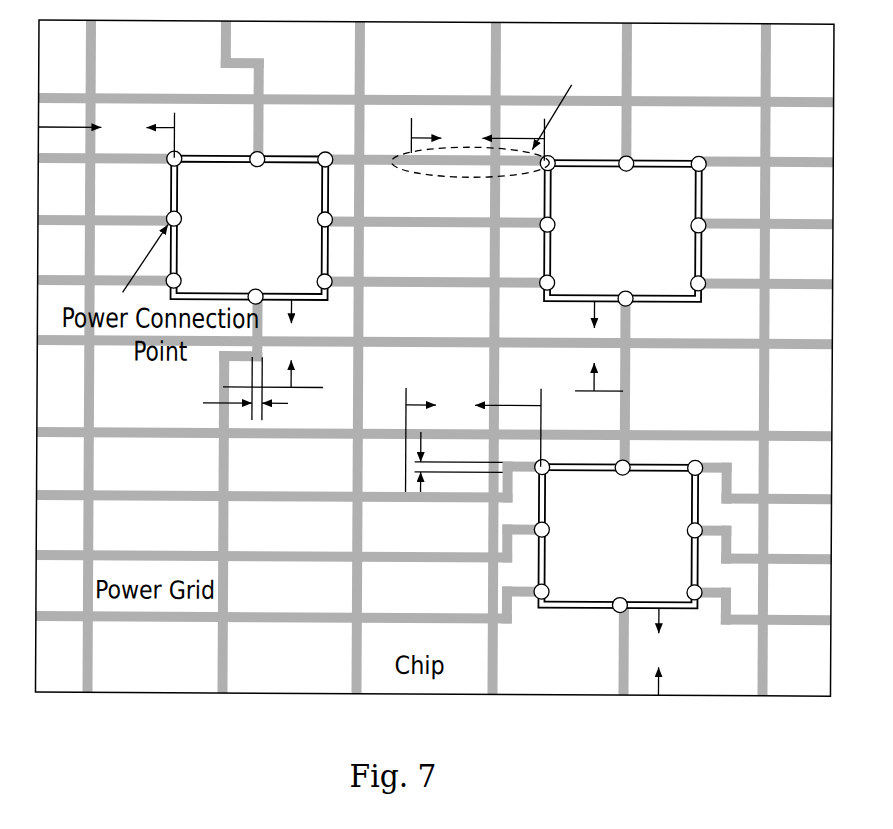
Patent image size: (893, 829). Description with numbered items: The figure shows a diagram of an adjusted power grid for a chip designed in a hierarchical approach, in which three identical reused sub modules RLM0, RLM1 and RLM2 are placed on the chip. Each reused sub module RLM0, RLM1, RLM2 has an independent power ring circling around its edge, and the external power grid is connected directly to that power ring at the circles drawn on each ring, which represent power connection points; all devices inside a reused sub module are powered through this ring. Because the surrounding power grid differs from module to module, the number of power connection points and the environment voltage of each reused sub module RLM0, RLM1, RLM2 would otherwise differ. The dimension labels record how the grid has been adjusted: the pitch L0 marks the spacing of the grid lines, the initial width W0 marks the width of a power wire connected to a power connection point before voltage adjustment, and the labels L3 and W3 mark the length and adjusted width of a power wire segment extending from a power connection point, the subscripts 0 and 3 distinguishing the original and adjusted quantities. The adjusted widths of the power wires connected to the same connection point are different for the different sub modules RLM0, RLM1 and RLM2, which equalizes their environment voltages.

The reused sub module RLM0 is at (249, 227).
The reused sub module RLM1 is at (623, 231).
The reused sub module RLM2 is at (618, 536).
The power grid pitch L0 is at (291, 302).
The distance L3 from power ring to power grid line L3 is at (447, 497).
The initial width of power wire W0 is at (435, 462).
The power grid line width W0 0 is at (435, 462).
The power connection strip width W3 is at (246, 407).
The power connection strip width W3 3 is at (246, 407).